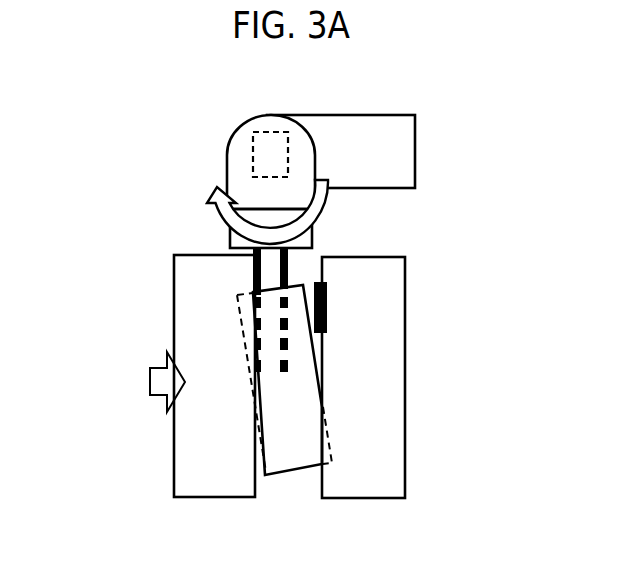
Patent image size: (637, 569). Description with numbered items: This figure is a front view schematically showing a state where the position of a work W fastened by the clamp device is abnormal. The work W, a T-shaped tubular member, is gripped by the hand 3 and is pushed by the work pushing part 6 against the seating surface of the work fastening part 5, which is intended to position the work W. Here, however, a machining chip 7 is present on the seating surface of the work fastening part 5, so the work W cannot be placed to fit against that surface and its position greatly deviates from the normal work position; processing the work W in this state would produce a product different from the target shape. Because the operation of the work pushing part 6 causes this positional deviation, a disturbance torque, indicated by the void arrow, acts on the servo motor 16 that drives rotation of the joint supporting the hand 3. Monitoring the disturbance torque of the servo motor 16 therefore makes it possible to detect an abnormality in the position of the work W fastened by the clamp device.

The hand 3 is at (227, 167).
The servo motor 16 is at (253, 152).
The work fastening part 5 is at (382, 433).
The work pushing part 6 is at (197, 443).
The machining chip 7 is at (327, 308).
The work W is at (292, 470).